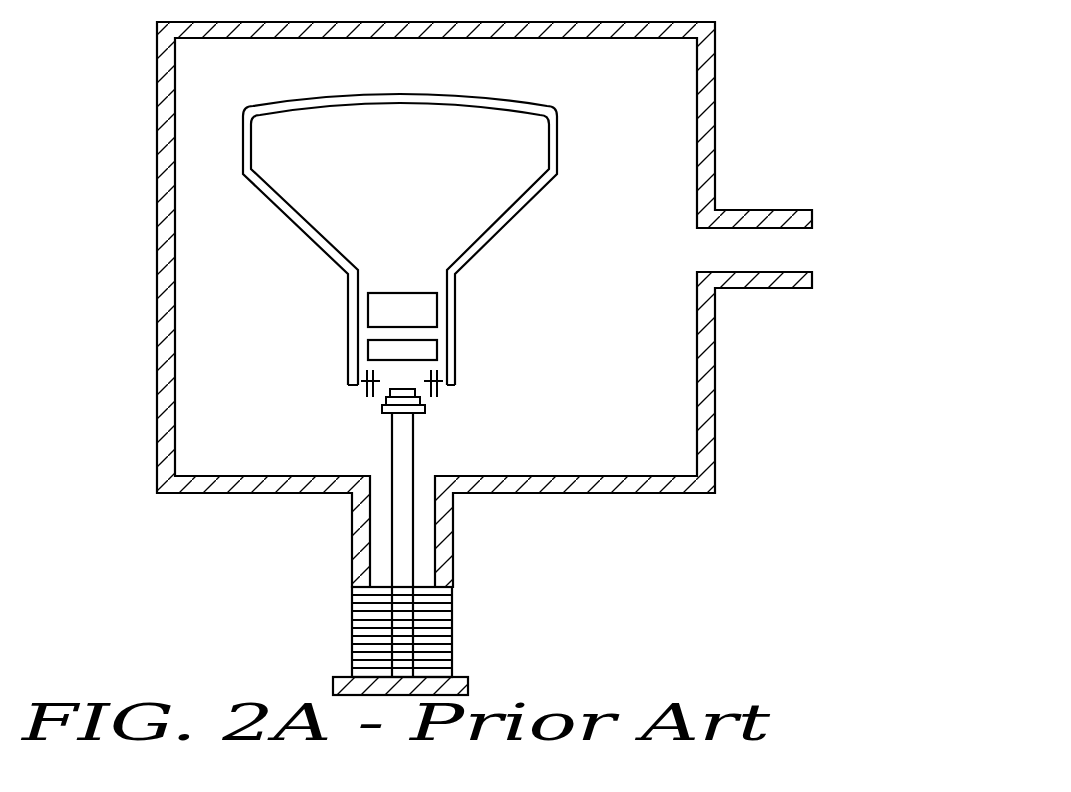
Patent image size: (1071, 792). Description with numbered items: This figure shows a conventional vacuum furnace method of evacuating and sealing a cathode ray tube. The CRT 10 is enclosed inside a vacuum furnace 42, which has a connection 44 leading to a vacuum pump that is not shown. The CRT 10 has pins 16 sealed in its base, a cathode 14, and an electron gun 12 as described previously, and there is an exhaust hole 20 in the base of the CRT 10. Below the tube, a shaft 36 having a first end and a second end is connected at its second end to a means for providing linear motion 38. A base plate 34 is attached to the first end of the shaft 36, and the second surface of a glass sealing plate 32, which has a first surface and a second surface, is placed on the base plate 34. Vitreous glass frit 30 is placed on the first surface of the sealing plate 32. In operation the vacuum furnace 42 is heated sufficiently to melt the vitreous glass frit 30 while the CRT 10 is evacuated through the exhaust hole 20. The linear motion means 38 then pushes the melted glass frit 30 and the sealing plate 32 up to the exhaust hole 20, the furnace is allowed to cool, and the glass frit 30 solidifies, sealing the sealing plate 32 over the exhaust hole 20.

The CRT 10 is at (557, 118).
The electron gun 12 is at (425, 305).
The cathode 14 is at (430, 344).
The pins 16 is at (441, 394).
The exhaust hole 20 is at (400, 375).
The vitreous glass frit 30 is at (420, 398).
The glass sealing plate 32 is at (383, 409).
The base plate 34 is at (423, 412).
The shaft 36 is at (397, 527).
The means for providing linear motion 38 is at (428, 621).
The vacuum furnace 42 is at (708, 64).
The connection 44 is at (783, 248).